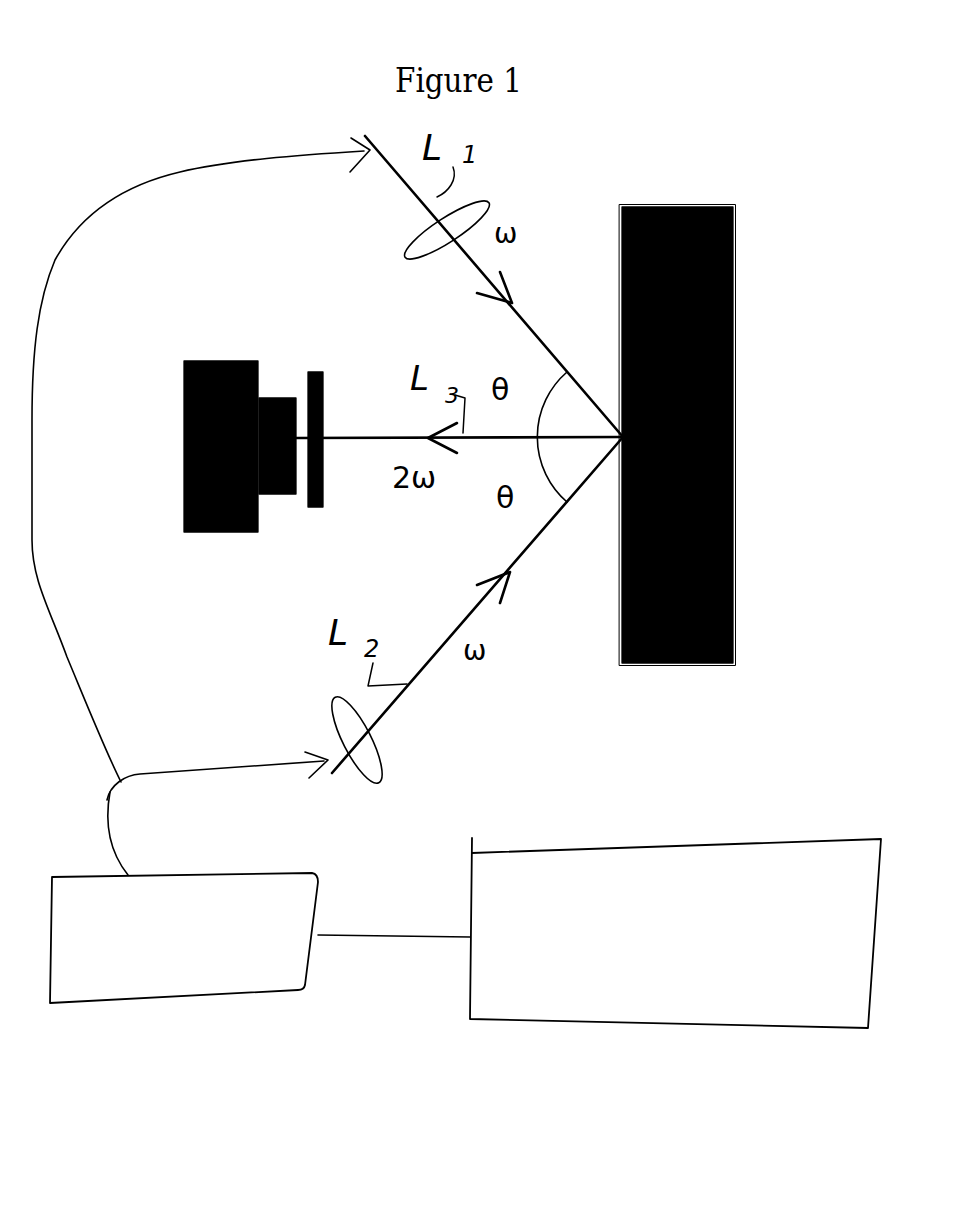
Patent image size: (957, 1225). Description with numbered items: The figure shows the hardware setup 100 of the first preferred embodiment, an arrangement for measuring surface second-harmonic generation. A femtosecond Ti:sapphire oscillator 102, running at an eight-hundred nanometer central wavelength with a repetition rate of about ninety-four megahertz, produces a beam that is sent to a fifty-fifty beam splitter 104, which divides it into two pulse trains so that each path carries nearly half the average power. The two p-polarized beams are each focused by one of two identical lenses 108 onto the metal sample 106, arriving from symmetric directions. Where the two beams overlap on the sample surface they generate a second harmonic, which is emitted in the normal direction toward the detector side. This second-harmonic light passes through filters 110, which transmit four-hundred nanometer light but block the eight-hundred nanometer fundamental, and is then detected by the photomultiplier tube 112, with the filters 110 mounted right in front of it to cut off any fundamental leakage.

The hardware setup 100 is at (815, 140).
The Ti:sapphire oscillator 102 is at (757, 1029).
The beam splitter 104 is at (130, 993).
The metal sample 106 is at (743, 183).
The lenses 108 is at (419, 222).
The filters 110 is at (327, 375).
The photomultiplier tube (PMT) 112 is at (222, 362).